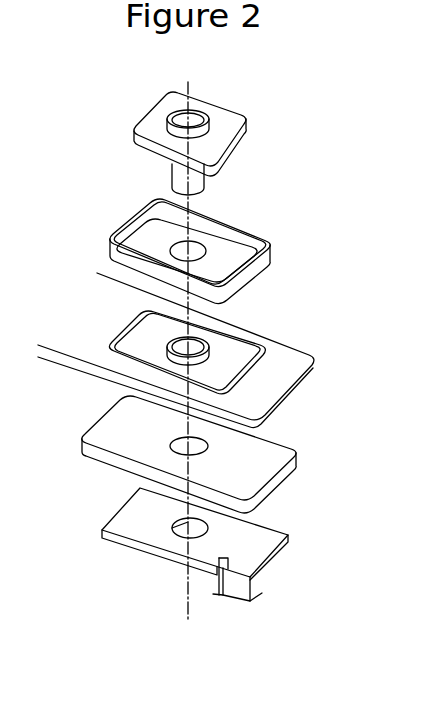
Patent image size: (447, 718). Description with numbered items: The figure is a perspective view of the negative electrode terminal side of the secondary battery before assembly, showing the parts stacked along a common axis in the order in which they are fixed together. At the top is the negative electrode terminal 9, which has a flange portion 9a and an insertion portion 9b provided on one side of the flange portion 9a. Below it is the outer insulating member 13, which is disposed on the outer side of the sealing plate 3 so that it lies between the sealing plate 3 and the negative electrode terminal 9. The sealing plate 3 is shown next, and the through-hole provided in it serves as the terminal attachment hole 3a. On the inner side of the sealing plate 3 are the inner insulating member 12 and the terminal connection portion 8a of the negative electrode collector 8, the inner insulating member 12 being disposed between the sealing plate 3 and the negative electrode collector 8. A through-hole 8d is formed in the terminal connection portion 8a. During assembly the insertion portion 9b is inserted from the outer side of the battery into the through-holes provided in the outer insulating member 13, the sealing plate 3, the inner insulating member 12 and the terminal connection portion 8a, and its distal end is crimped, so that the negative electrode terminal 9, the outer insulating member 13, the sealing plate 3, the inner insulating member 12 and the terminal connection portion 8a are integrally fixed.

The negative electrode terminal 9 is at (348, 108).
The flange portion 9a is at (225, 126).
The insertion portion 9b is at (197, 185).
The outer insulating member 13 is at (272, 256).
The sealing plate 3 is at (222, 350).
The terminal attachment hole 3a is at (196, 337).
The inner insulating member 12 is at (300, 466).
The negative electrode collector 8 is at (228, 576).
The terminal connection portion 8a is at (143, 520).
The through-hole 8d is at (180, 517).